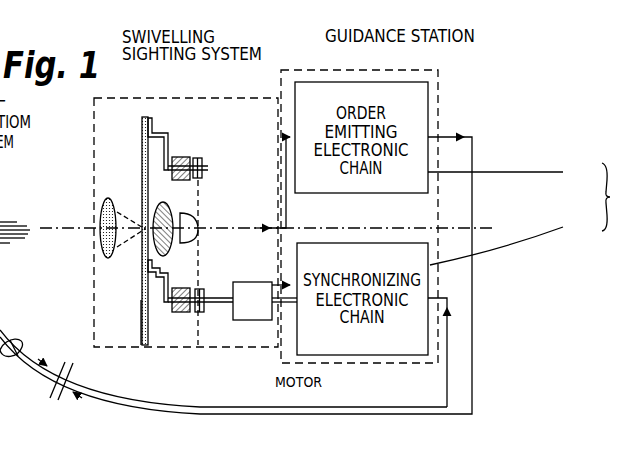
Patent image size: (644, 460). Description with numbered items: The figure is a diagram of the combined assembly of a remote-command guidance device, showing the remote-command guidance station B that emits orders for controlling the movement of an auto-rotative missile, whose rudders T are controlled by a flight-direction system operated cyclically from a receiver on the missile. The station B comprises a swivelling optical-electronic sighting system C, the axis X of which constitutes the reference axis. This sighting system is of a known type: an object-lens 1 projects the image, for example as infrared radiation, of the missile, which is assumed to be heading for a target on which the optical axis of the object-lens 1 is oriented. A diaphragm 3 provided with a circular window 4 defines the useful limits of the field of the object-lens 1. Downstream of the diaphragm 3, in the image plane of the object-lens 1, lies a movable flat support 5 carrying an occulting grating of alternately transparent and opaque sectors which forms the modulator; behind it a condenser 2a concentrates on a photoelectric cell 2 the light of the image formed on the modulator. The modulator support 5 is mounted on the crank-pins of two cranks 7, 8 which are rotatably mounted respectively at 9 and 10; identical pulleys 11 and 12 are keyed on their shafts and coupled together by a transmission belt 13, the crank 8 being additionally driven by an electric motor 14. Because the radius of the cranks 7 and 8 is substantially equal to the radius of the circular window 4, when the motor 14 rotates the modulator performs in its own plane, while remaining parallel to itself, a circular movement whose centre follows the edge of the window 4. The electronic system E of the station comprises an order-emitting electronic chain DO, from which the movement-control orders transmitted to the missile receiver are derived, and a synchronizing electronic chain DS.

The object-lens 1 is at (105, 207).
The condenser 2a is at (152, 207).
The photoelectric cell 2 is at (190, 212).
The diaphragm 3 is at (143, 310).
The circular window 4 is at (138, 258).
The movable flat support 5 is at (149, 117).
The crank 7 is at (168, 138).
The crank 8 is at (168, 285).
The rotatable mounting of crank 9 is at (182, 157).
The rotatable mounting of crank 10 is at (185, 315).
The pulley 11 is at (203, 160).
The pulley 12 is at (200, 315).
The transmission belt 13 is at (203, 218).
The electric motor 14 is at (255, 320).
The swivelling optical-electronic sighting system C is at (127, 98).
The remote-command guidance station B is at (282, 70).
The rudders T is at (3, 225).
The axis X— X is at (267, 232).
The electronic system E is at (603, 246).
The order-emitting electronic chain DO is at (512, 174).
The synchronizing electronic chain DS is at (512, 239).